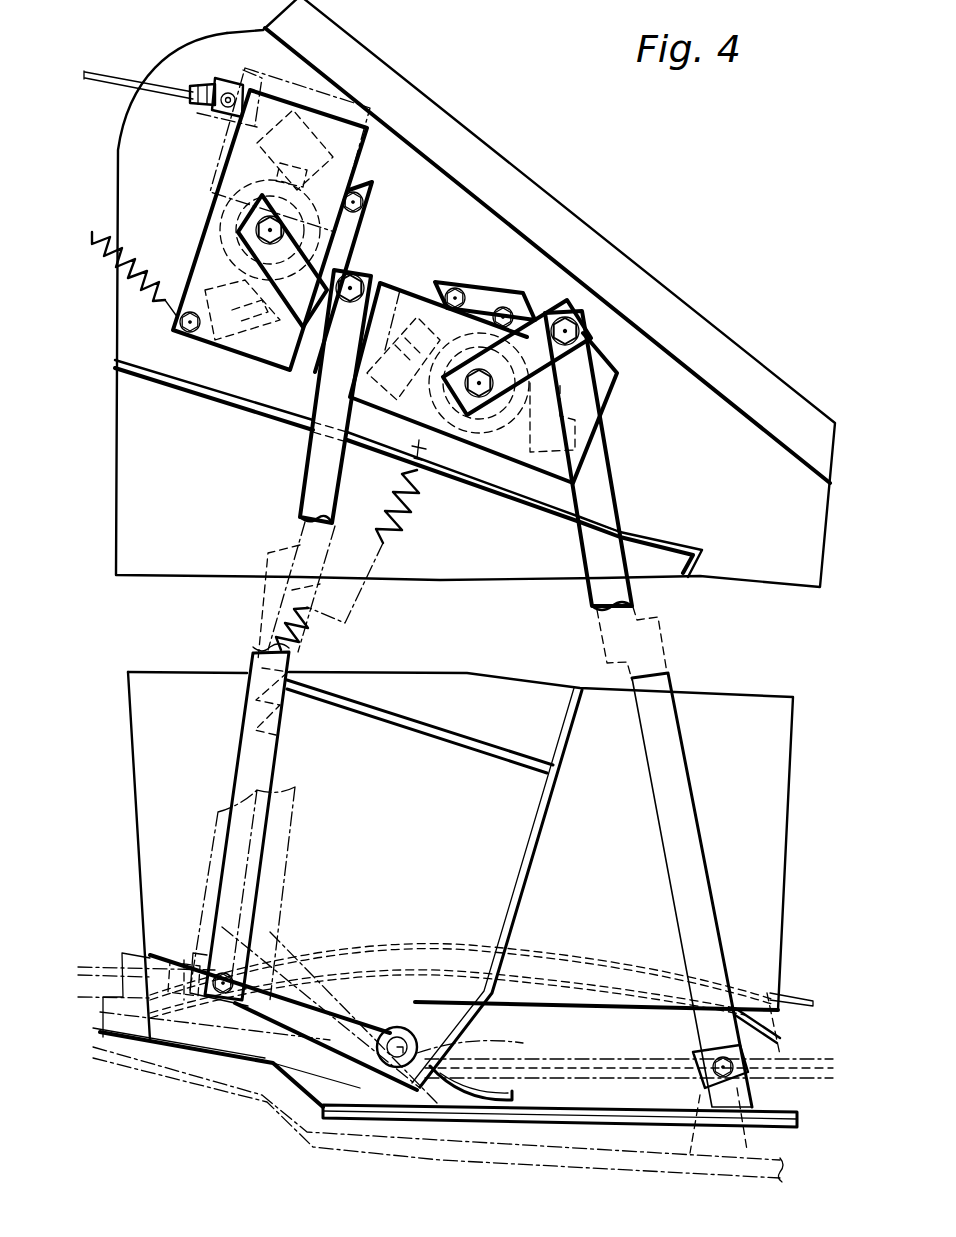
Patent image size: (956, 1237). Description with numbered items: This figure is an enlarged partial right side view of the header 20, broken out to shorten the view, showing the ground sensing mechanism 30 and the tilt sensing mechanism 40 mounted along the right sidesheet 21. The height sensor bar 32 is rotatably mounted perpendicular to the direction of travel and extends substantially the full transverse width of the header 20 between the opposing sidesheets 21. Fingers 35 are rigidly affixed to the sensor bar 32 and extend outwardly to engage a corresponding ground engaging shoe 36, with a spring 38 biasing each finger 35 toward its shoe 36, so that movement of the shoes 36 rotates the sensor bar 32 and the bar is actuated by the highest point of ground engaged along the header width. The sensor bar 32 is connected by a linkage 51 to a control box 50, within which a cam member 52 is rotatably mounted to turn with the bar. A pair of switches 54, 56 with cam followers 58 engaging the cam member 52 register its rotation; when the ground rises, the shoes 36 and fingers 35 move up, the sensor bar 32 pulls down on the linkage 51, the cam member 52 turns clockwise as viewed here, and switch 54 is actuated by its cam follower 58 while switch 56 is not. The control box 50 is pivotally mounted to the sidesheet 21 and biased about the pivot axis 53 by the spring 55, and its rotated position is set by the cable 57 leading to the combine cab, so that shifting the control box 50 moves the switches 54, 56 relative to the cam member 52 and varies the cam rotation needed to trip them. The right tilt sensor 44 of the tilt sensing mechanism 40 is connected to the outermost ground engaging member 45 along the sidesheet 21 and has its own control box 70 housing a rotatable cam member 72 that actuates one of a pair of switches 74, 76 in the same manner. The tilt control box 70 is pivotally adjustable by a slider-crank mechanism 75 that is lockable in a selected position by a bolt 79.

The header 20 is at (632, 148).
The sidesheet 21 is at (455, 124).
The ground sensing mechanism 30 is at (192, 1098).
The height sensor bar 32 is at (398, 1025).
The finger 35 is at (490, 1092).
The ground engaging shoe 36 is at (537, 1100).
The spring 38 is at (400, 530).
The tilt sensing mechanism 40 is at (794, 988).
The right tilt sensor 44 is at (693, 1052).
The outermost ground engaging member 45 is at (773, 1108).
The control box 50 is at (229, 154).
The linkage 51 is at (308, 456).
The cam member 52 is at (240, 228).
The pivot axis 53 is at (256, 222).
The switch 54 is at (306, 108).
The spring 55 is at (160, 303).
The switch 56 is at (277, 362).
The cable 57 is at (131, 76).
The cam follower 58 is at (222, 252).
The control box 70 is at (606, 387).
The cam member 72 is at (477, 400).
The switch 74 is at (385, 300).
The slider-crank mechanism 75 is at (527, 293).
The switch 76 is at (585, 428).
The bolt 79 is at (550, 300).